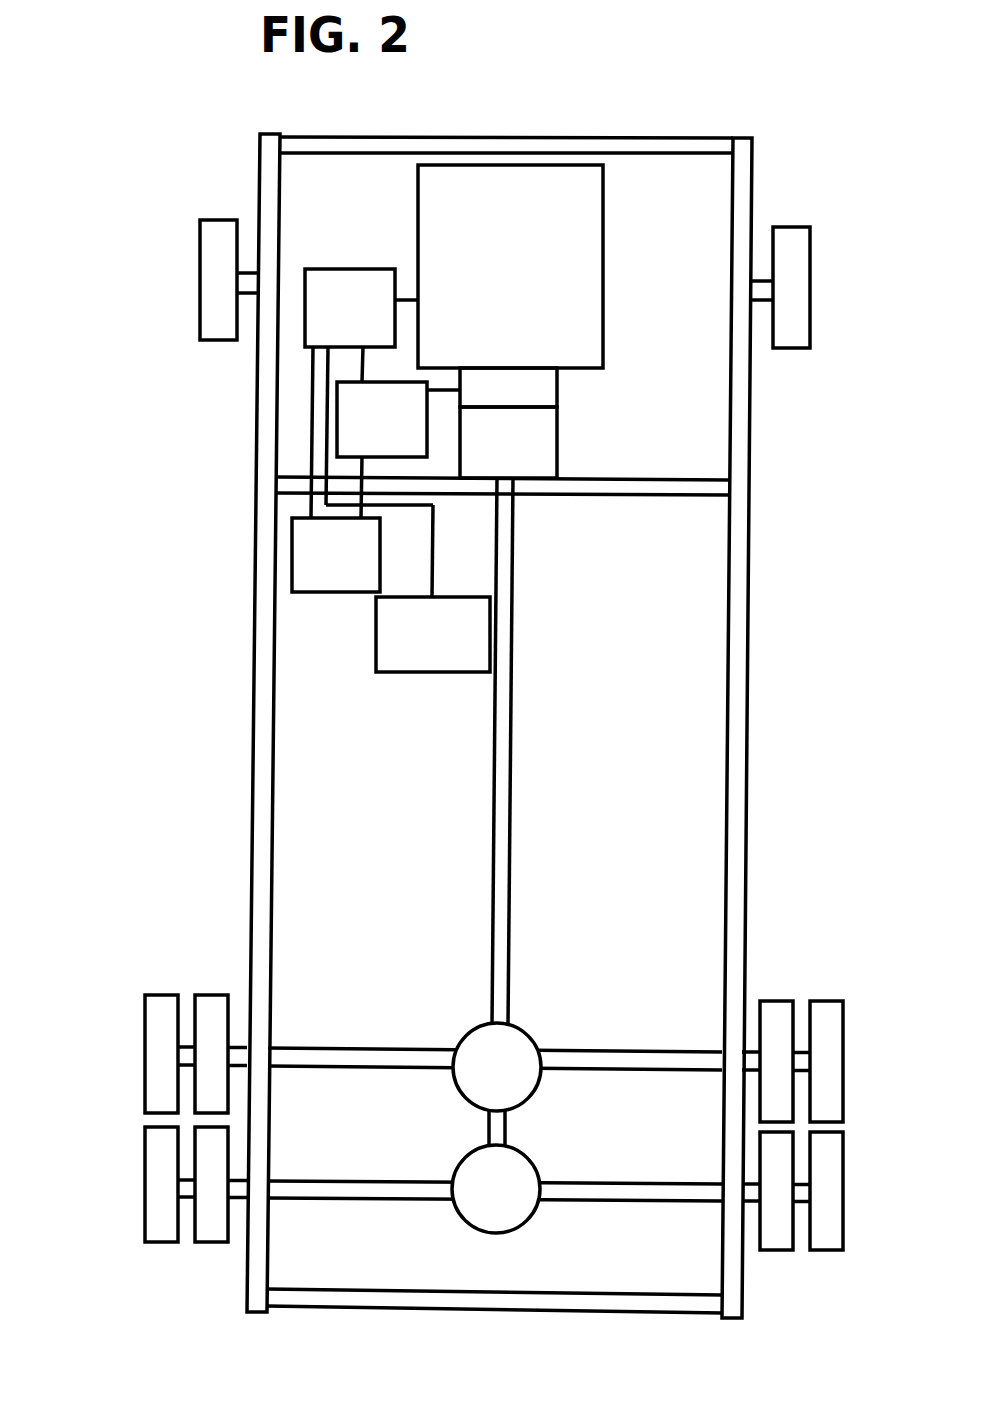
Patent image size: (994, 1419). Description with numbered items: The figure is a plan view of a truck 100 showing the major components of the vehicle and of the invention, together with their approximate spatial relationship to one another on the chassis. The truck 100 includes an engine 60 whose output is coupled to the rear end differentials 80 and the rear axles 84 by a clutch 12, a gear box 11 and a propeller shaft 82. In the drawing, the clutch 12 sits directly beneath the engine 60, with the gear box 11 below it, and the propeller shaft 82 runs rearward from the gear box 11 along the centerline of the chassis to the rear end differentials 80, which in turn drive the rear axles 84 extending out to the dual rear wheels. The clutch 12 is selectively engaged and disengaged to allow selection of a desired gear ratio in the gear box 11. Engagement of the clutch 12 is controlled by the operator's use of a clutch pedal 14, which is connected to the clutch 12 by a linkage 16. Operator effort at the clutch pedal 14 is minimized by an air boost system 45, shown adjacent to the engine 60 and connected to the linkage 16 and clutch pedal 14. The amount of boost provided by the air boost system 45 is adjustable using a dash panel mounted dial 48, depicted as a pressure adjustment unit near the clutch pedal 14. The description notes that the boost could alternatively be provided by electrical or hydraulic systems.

The truck 100 is at (206, 688).
The engine 60 is at (603, 278).
The clutch 12 is at (557, 389).
The gear box 11 is at (557, 445).
The air boost system 45 is at (350, 268).
The linkage 16 is at (338, 438).
The clutch pedal 14 is at (333, 592).
The dash panel mounted dial 48 is at (425, 672).
The propeller shaft 82 is at (508, 903).
The rear end differentials 80 is at (533, 1040).
The rear axles 84 is at (638, 1070).